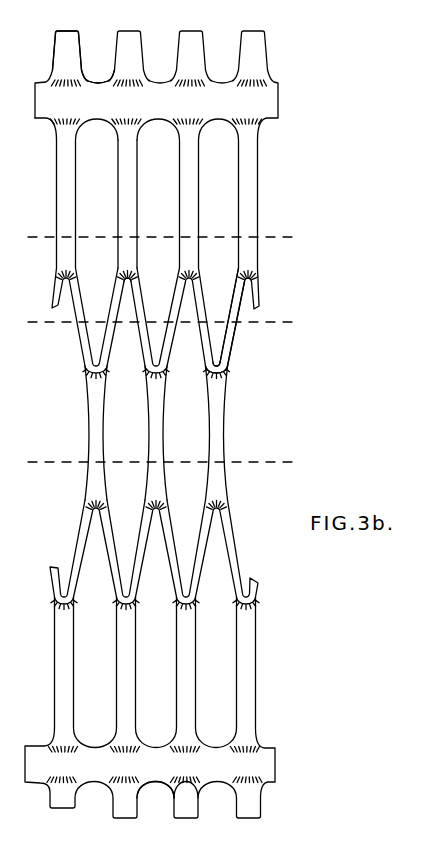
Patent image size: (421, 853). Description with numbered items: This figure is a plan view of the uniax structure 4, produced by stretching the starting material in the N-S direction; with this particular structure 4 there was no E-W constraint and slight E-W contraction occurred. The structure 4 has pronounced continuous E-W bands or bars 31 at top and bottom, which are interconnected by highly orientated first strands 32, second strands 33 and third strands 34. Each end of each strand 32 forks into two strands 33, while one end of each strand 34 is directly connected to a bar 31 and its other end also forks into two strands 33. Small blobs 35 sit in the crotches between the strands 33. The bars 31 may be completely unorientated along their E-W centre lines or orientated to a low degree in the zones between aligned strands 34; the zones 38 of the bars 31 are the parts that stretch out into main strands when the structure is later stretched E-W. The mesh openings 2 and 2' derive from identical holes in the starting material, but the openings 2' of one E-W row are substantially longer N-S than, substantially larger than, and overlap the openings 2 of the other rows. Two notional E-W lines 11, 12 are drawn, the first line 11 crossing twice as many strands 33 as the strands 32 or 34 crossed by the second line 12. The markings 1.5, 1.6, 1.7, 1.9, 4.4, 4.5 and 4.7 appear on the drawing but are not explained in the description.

The uniax structure 4 is at (50, 66).
The zone of the bar 38 is at (97, 107).
The bar 31 is at (68, 98).
The first holes / mesh openings 2 is at (147, 433).
The second holes / mesh openings 2' is at (154, 505).
The third strand 34 is at (189, 216).
The blob 35 is at (125, 272).
The second strand 33 is at (147, 347).
The first strand 32 is at (157, 443).
The outer leg 1.6 is at (248, 222).
The notch 4.4 is at (247, 275).
The slanted strand 1.7 is at (230, 328).
The middle leg 1.5 is at (217, 437).
The lower outer leg 1.9 is at (245, 740).
The bar region 4.7 is at (157, 765).
The bar region 4.5 is at (187, 765).
The second notional E-W line 12 is at (151, 350).
The first notional E-W line 11 is at (151, 322).